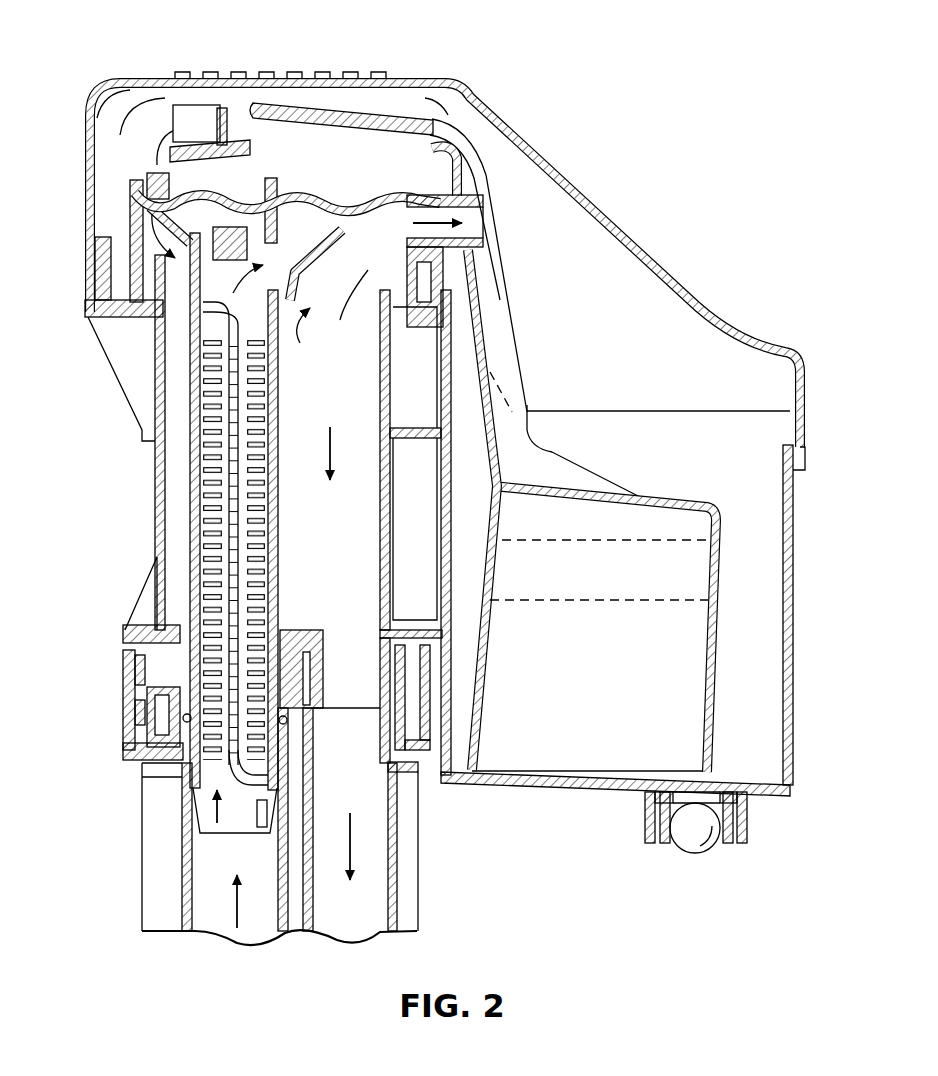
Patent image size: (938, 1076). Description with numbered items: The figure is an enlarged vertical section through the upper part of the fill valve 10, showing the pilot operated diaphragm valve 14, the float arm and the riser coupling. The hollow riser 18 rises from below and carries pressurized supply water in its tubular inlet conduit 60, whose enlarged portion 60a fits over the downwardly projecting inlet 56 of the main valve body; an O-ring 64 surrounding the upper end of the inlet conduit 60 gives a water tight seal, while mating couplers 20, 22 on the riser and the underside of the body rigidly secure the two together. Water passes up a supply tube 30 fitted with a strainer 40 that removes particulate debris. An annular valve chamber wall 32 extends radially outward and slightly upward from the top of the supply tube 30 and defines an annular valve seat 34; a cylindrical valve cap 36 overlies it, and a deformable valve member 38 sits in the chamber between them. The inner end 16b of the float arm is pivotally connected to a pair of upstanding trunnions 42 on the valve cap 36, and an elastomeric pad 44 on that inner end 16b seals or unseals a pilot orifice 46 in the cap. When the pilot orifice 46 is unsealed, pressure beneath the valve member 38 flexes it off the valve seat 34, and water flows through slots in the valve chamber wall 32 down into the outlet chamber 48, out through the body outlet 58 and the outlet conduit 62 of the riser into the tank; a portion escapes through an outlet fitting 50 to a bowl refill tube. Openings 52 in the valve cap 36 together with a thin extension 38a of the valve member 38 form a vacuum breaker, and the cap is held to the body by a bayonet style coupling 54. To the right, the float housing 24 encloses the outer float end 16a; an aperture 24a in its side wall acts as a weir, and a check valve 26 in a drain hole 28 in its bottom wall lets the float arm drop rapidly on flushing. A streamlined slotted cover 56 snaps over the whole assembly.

The fill valve 10 is at (630, 162).
The pilot operated diaphragm valve 14 is at (312, 310).
The outer float end 16a is at (700, 698).
The inner end 16b is at (190, 115).
The hollow riser 18 is at (140, 828).
The coupler 20 is at (122, 758).
The coupler 22 is at (170, 613).
The float housing 24 is at (795, 672).
The aperture 24a is at (562, 600).
The check valve 26 is at (672, 866).
The drain hole 28 is at (707, 793).
The supply tube 30 is at (278, 563).
The annular valve chamber wall 32 is at (305, 286).
The annular valve seat 34 is at (290, 297).
The cylindrical valve cap 36 is at (305, 172).
The deformable valve member 38 is at (183, 290).
The thin extension 38a is at (150, 212).
The strainer 40 is at (257, 395).
The upstanding trunnions 42 is at (245, 130).
The elastomeric pad 44 is at (203, 138).
The pilot orifice 46 is at (200, 162).
The outlet chamber 48 is at (309, 528).
The outlet fitting 50 is at (487, 238).
The openings 52 is at (150, 185).
The bayonet style coupling 54 is at (430, 290).
The slotted cover 56 is at (643, 262).
The outlet 58 is at (323, 658).
The inlet conduit 60 is at (182, 873).
The enlarged portion 60a is at (143, 723).
The outlet conduit 62 is at (400, 870).
The O-ring 64 is at (290, 720).